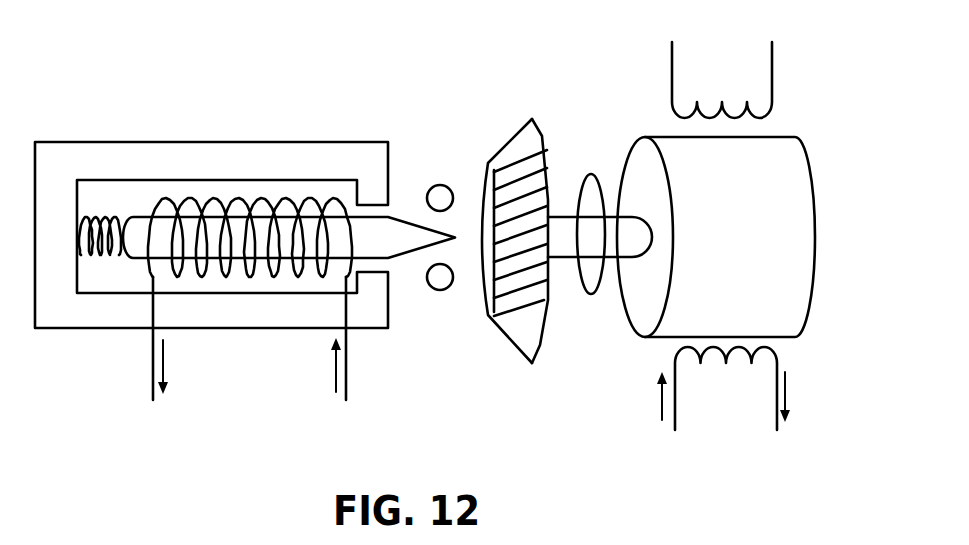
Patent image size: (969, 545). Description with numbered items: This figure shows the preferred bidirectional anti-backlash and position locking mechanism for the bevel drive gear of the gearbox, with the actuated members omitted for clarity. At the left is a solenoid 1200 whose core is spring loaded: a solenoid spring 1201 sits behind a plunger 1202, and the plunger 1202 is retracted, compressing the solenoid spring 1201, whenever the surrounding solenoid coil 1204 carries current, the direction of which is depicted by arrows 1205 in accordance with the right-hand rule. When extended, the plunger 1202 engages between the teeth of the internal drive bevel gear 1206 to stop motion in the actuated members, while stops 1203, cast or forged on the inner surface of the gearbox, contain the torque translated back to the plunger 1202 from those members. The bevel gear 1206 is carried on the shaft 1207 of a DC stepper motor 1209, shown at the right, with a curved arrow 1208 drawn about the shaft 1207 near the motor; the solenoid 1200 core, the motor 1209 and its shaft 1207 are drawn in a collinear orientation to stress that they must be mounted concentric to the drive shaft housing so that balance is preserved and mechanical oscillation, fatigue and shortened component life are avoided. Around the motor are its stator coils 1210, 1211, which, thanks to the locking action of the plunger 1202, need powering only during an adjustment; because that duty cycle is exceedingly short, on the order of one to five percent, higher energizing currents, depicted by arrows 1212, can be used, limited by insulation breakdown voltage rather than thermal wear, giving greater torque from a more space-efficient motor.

The solenoid 1200 is at (213, 141).
The solenoid spring 1201 is at (90, 221).
The plunger 1202 is at (396, 216).
The stops 1203 is at (444, 185).
The solenoid coil 1204 is at (151, 353).
The arrows 1205 is at (333, 372).
The internal drive bevel gear 1206 is at (522, 365).
The shaft 1207 is at (575, 265).
The rotation direction 1208 is at (575, 209).
The DC stepper motor 1209 is at (633, 335).
The stator coil 1210 is at (673, 49).
The stator coil 1211 is at (677, 392).
The arrows 1212 is at (660, 398).